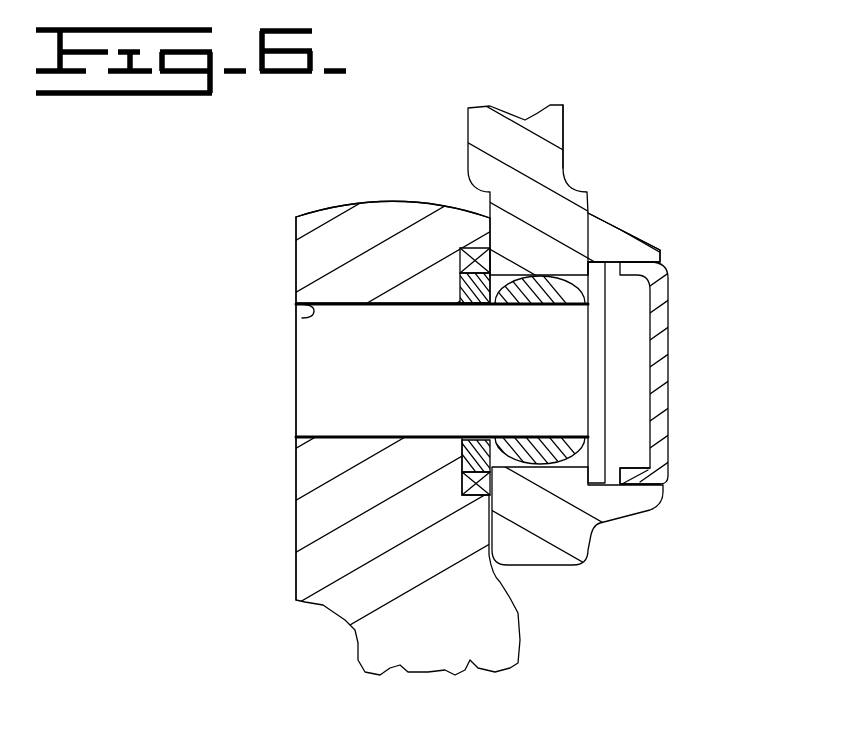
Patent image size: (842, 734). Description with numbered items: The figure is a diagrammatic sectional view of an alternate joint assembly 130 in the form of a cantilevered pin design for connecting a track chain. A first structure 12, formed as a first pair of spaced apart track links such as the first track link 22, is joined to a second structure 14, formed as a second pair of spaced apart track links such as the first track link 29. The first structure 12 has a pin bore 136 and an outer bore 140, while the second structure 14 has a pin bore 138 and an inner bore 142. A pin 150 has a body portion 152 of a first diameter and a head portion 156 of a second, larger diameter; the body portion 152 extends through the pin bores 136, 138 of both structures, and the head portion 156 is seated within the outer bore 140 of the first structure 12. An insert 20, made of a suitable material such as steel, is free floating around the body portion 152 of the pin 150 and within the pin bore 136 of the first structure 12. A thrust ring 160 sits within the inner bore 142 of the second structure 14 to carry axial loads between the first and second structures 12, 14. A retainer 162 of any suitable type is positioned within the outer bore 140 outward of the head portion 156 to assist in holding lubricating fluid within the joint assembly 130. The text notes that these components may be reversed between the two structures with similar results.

The first structure 12 is at (511, 96).
The second structure 14 is at (313, 191).
The insert 20 is at (554, 297).
The first track link 22 is at (563, 155).
The first track link 29 is at (367, 203).
The joint assembly 130 is at (661, 156).
The pin bore 136 is at (576, 290).
The pin bore 138 is at (296, 313).
The outer bore 140 is at (612, 483).
The inner bore 142 is at (462, 479).
The pin 150 is at (448, 387).
The body portion 152 is at (333, 377).
The head portion 156 is at (593, 347).
The thrust ring 160 is at (470, 305).
The retainer 162 is at (692, 347).